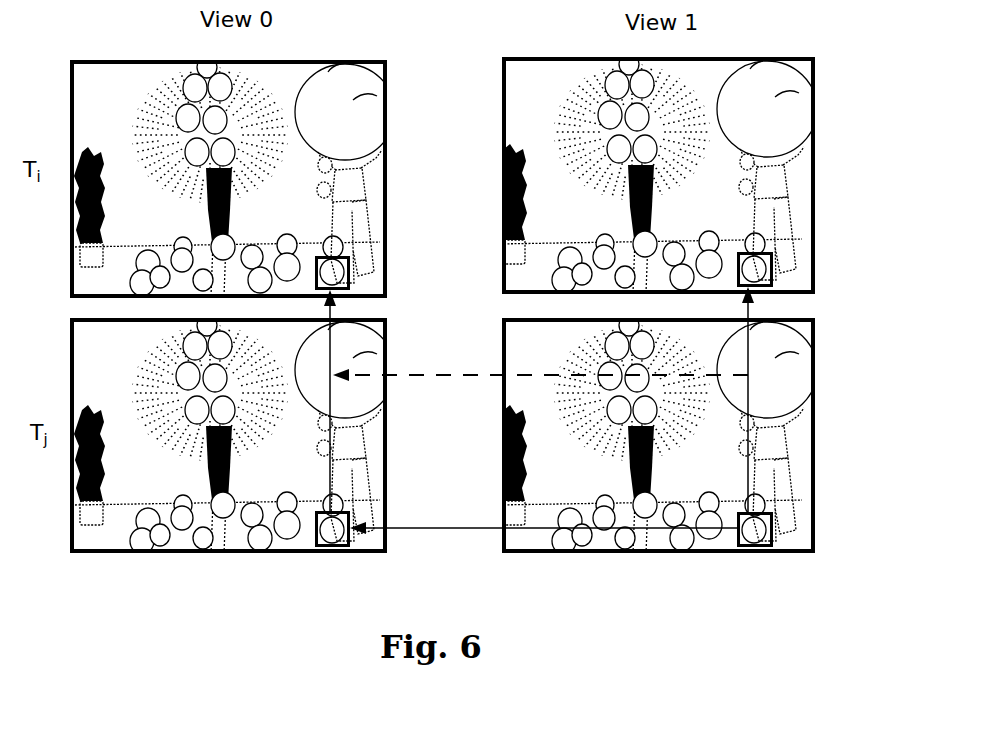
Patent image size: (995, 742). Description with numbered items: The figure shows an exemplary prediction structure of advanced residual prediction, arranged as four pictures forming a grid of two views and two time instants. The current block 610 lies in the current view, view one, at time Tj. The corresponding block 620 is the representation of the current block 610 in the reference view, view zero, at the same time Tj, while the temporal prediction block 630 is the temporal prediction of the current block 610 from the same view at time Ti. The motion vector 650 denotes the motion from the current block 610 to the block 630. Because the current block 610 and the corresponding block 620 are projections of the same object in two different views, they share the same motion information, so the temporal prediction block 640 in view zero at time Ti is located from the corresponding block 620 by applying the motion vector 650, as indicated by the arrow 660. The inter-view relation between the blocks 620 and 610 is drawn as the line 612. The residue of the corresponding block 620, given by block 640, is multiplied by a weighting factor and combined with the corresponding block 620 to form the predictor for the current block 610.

The current block 610 is at (773, 540).
The corresponding block 620 is at (350, 533).
The temporal prediction block 630 is at (773, 284).
The temporal prediction block of corresponding block 640 is at (388, 289).
The motion vector 650 is at (753, 382).
The motion vector of corresponding block 660 is at (333, 366).
The disparity vector 612 is at (424, 528).